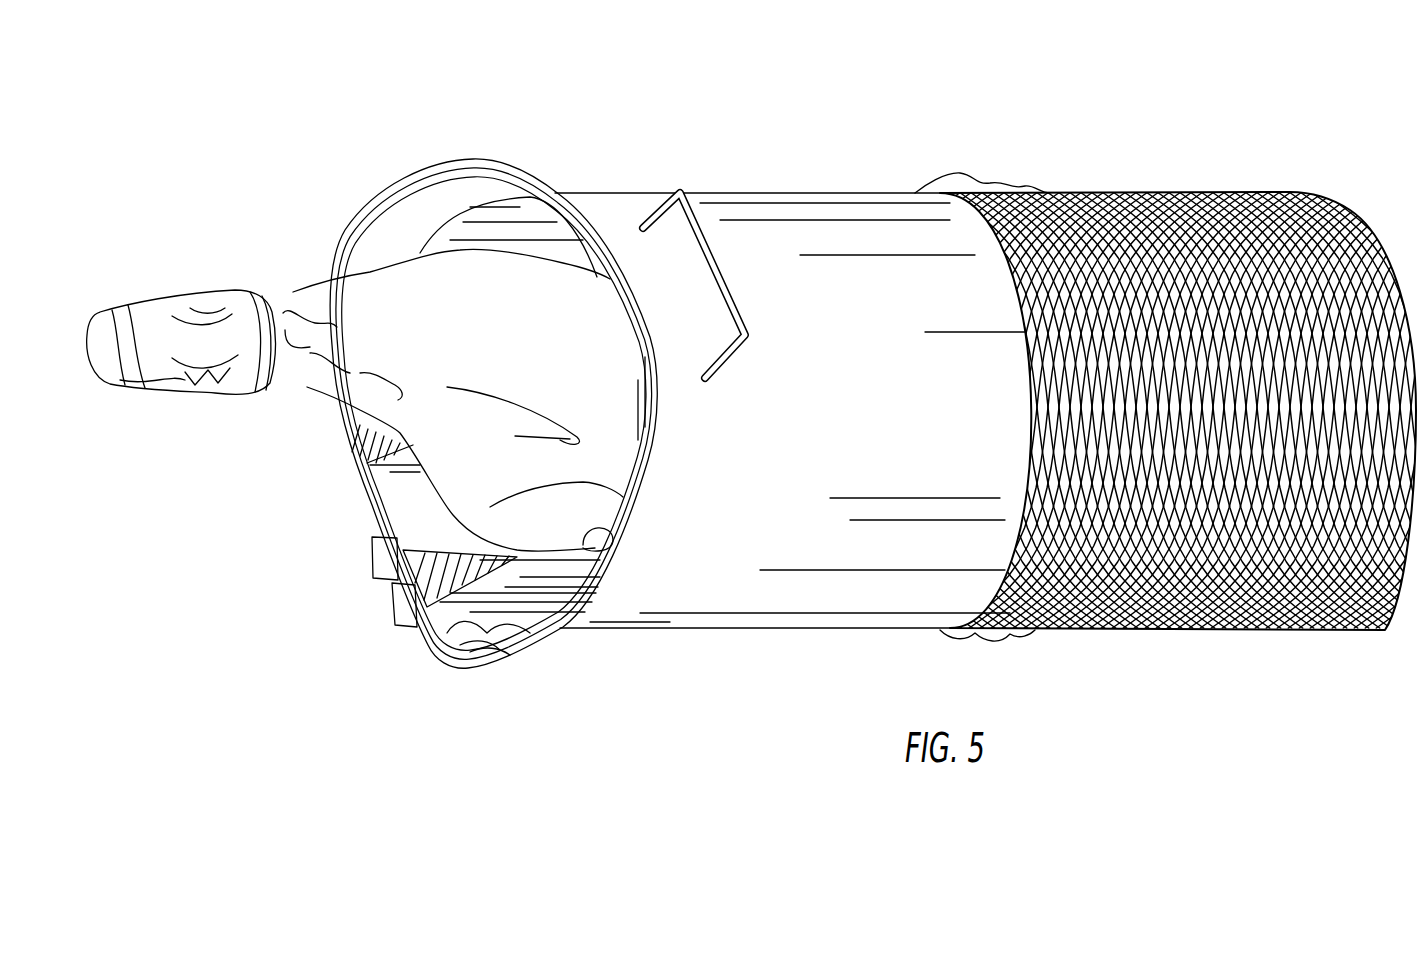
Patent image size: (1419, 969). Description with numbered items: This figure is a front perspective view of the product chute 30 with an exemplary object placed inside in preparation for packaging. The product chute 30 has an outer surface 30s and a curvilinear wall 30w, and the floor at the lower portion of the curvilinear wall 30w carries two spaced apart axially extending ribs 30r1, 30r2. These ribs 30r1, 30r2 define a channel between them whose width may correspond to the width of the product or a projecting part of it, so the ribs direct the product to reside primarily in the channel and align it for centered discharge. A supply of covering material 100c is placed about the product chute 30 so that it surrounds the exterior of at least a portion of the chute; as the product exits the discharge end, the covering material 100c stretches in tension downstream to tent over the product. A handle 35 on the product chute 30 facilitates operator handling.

The product chute 30 is at (790, 112).
The outer surface 30s is at (787, 588).
The first axially extending rib 30r1 is at (367, 427).
The second axially extending rib 30r2 is at (392, 573).
The curvilinear wall 30w is at (497, 622).
The handle 35 is at (710, 233).
The covering material 100c is at (1182, 190).